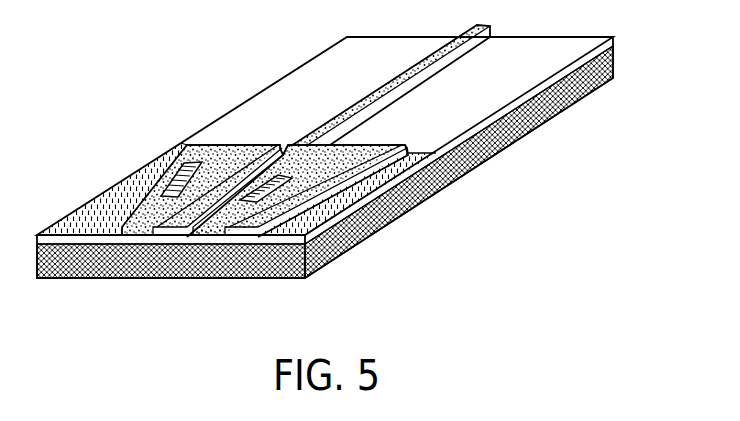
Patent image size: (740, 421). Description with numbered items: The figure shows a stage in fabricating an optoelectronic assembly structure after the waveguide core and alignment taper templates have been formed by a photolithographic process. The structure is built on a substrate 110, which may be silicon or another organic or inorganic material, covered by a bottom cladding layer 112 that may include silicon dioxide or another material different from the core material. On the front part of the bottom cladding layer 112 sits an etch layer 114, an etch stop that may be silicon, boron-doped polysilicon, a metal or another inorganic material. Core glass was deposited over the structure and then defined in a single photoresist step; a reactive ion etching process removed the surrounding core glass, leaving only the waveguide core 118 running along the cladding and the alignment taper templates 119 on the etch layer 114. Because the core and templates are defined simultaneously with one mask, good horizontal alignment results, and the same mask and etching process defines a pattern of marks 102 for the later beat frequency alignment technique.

The pattern of marks 102 is at (175, 172).
The substrate 110 is at (493, 158).
The bottom cladding layer 112 is at (563, 50).
The etch layer 114 is at (83, 209).
The waveguide core 118 is at (477, 25).
The alignment taper templates 119 is at (207, 143).